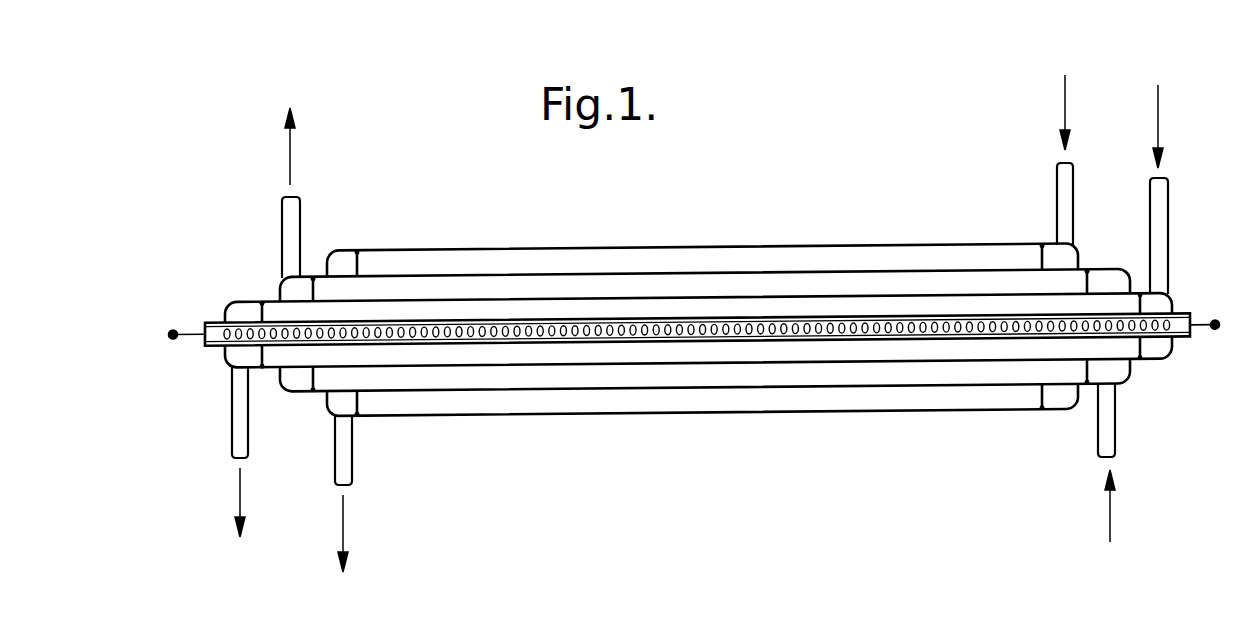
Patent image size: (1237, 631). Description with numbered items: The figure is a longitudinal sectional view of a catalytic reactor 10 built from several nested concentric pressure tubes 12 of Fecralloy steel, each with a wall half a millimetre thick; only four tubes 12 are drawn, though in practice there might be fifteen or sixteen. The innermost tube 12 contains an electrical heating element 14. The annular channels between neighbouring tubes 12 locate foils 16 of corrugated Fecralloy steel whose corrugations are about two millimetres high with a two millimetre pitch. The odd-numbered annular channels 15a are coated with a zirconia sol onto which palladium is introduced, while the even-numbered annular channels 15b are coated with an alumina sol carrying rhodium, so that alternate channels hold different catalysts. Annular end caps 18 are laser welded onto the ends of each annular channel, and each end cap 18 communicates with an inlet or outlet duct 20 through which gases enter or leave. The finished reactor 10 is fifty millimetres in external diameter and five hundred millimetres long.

The catalytic reactor 10 is at (710, 165).
The pressure tubes 12 is at (473, 322).
The electrical heating element 14 is at (740, 333).
The annular channels 15a is at (413, 355).
The annular channels 15b is at (533, 377).
The foils 16 is at (843, 353).
The annular end caps 18 is at (352, 250).
The inlet or outlet duct 20 is at (290, 232).